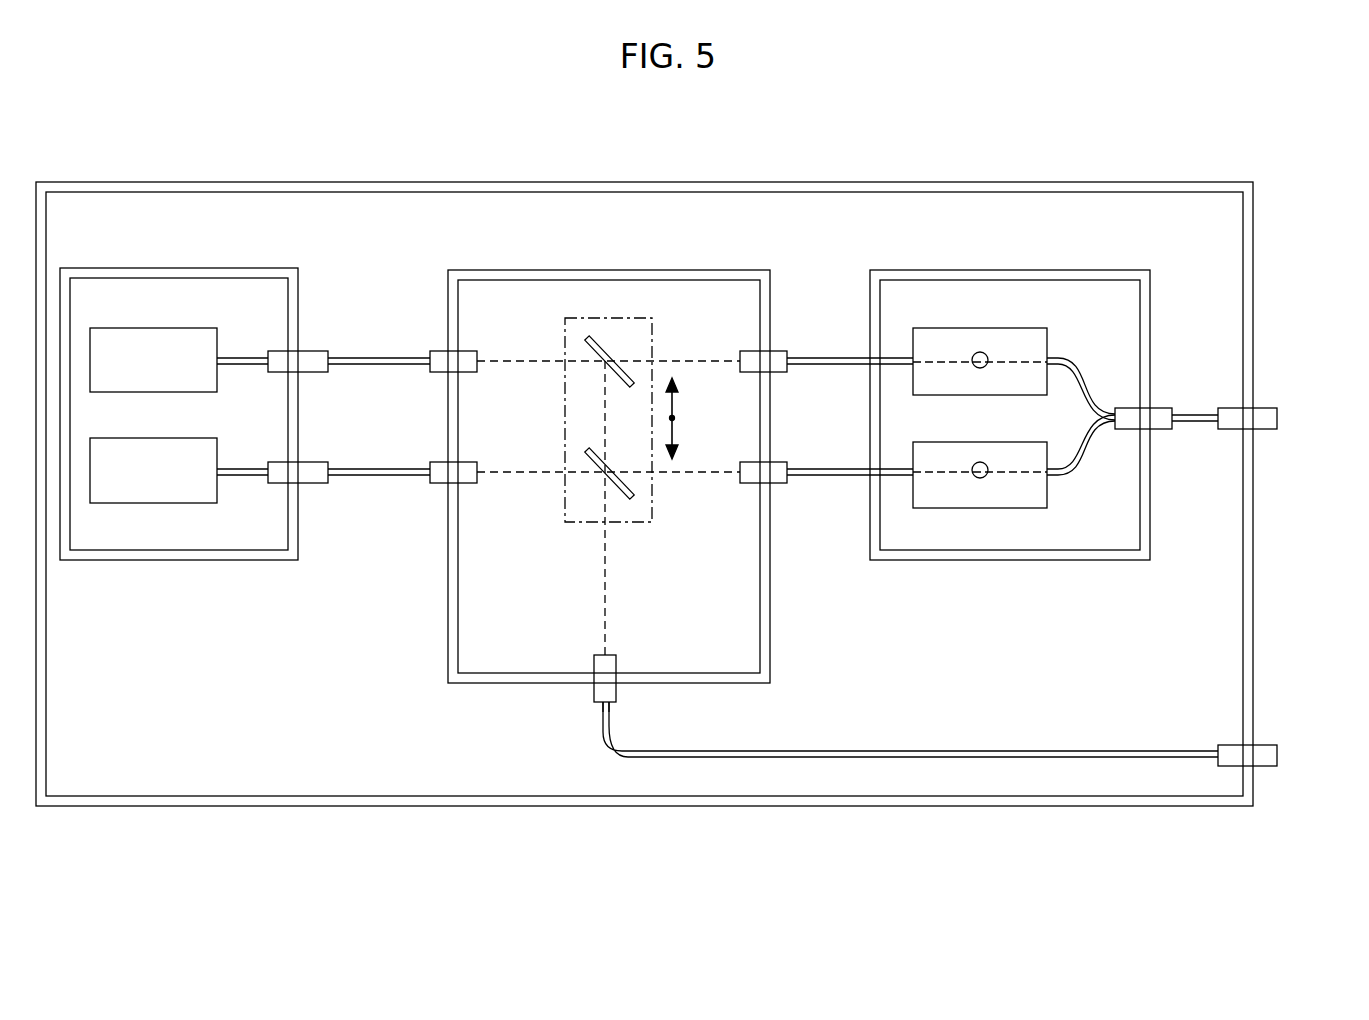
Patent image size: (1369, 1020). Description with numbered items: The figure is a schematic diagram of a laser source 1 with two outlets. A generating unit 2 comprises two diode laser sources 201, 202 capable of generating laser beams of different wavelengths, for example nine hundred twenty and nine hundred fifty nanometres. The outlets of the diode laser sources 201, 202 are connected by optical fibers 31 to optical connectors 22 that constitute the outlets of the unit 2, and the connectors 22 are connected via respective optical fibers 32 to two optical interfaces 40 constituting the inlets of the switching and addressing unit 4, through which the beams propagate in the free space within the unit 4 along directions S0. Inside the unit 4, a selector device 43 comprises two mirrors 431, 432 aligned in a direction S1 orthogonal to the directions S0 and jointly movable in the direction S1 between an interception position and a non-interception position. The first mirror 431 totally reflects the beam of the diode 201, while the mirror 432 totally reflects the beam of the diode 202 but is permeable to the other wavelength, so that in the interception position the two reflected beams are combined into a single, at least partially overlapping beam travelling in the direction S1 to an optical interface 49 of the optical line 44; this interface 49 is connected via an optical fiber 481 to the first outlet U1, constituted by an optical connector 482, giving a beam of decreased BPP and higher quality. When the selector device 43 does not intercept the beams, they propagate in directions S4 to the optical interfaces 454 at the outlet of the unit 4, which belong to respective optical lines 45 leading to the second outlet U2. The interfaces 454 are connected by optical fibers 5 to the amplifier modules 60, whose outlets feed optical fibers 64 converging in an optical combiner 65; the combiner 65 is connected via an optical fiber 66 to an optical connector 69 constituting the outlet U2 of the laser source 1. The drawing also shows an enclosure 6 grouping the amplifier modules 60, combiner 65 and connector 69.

The laser source 1 is at (1306, 305).
The generating unit 2 is at (215, 568).
The diode laser source 201 is at (197, 348).
The diode laser source 202 is at (180, 483).
The optical fibers 31 is at (242, 368).
The optical connectors 22 is at (320, 374).
The optical fibers 32 is at (368, 357).
The optical interfaces 40 is at (468, 374).
The switching and addressing unit 4 is at (446, 633).
The directions of outgoing laser beams S0 is at (540, 358).
The direction of mirror alignment and movement S1 is at (600, 622).
The selector device 43 is at (658, 514).
The first mirror 431 is at (603, 343).
The second mirror 432 is at (620, 498).
The directions of non-intercepted laser beams S4 is at (715, 372).
The optical line 44 is at (630, 650).
The optical interface 49 is at (600, 702).
The optical fiber 481 is at (990, 750).
The optical connector 482 is at (1232, 745).
The first outlet U1 is at (1290, 760).
The optical interfaces 454 is at (772, 352).
The optical lines 45 is at (853, 333).
The optical fibers 5 is at (826, 367).
The detection unit 6 is at (1160, 292).
The amplifier modules 60 is at (950, 382).
The optical fibers 64 is at (1093, 375).
The optical combiner 65 is at (1160, 430).
The optical fiber 66 is at (1200, 414).
The optical connector 69 is at (1268, 430).
The second outlet U2 is at (1293, 410).